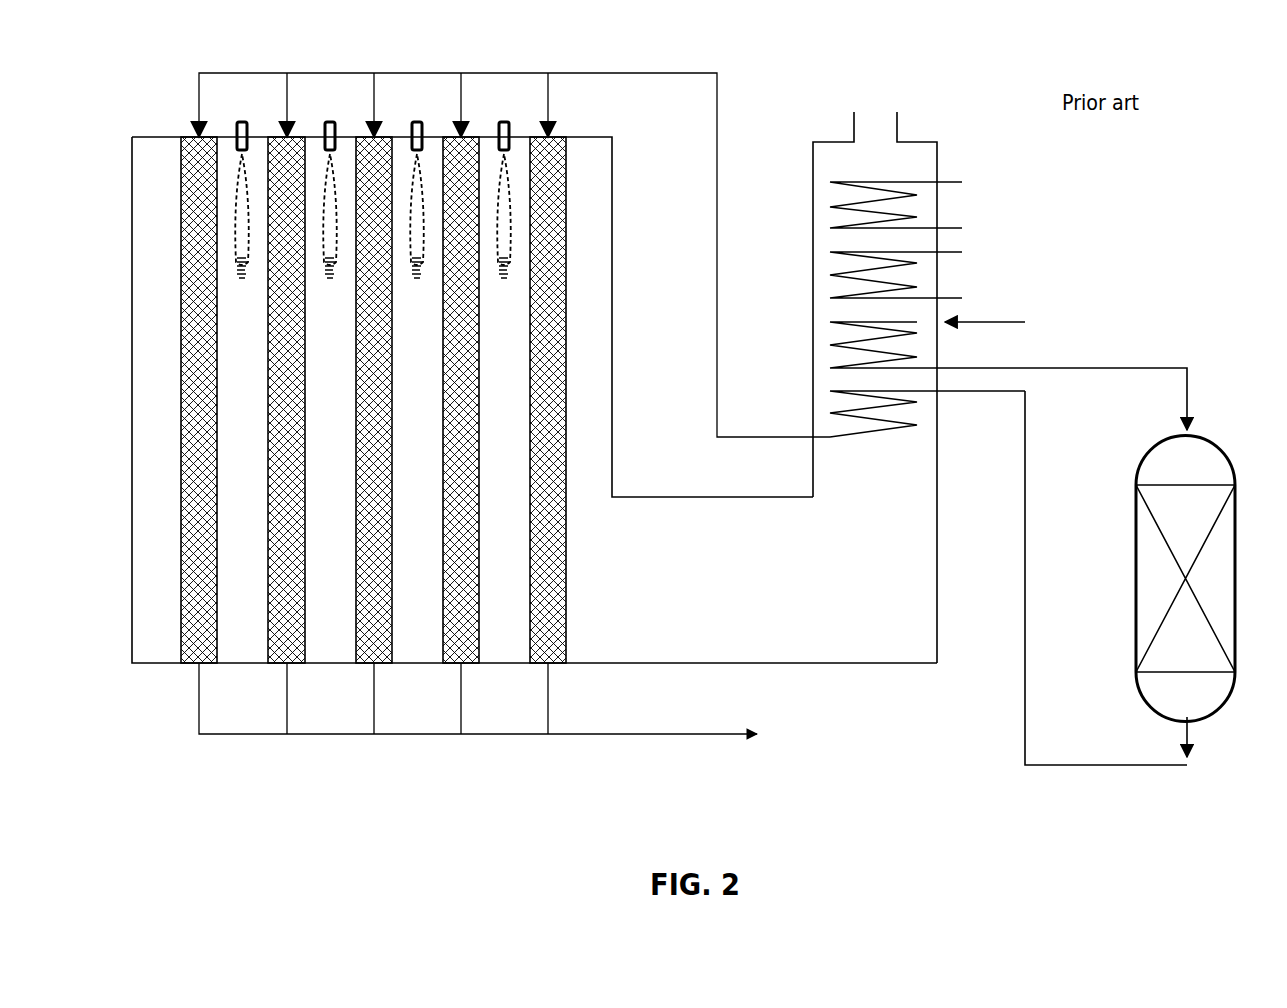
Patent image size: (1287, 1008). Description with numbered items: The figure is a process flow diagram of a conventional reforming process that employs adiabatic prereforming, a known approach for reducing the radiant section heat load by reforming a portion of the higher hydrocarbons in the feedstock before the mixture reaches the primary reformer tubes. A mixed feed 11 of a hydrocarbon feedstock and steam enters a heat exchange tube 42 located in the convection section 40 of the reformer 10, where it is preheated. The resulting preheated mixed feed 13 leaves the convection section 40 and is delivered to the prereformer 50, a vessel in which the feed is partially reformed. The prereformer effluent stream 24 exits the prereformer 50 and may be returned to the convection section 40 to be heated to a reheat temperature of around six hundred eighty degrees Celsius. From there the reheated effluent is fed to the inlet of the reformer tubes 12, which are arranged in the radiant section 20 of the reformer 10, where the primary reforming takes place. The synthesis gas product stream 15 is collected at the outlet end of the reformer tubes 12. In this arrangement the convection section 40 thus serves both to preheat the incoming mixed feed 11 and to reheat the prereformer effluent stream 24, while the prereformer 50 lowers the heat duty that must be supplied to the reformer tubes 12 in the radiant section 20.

The reformer 10 is at (153, 108).
The reformer tubes 12 is at (180, 356).
The radiant section 20 is at (587, 295).
The synthesis gas product stream 15 is at (653, 736).
The convection section 40 is at (823, 240).
The heat exchange tube 42 is at (835, 345).
The mixed feed 11 is at (990, 320).
The preheated mixed feed 13 is at (1000, 366).
The prereformer 50 is at (1232, 458).
The prereformer effluent stream 24 is at (1083, 760).